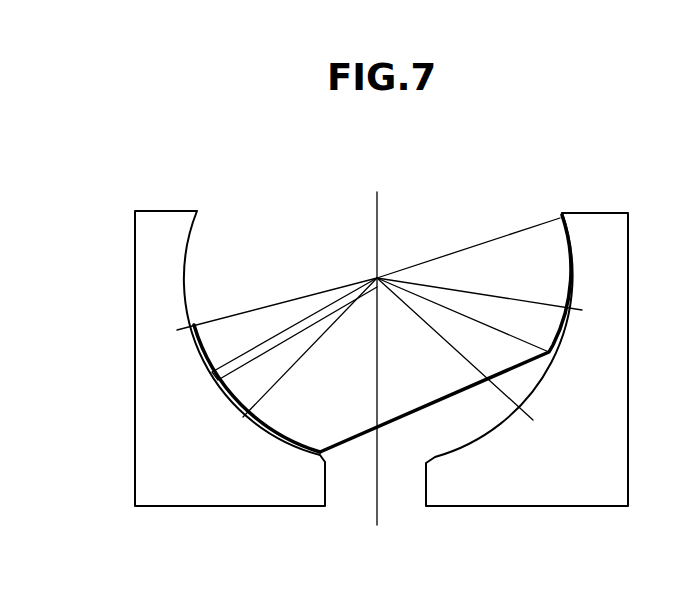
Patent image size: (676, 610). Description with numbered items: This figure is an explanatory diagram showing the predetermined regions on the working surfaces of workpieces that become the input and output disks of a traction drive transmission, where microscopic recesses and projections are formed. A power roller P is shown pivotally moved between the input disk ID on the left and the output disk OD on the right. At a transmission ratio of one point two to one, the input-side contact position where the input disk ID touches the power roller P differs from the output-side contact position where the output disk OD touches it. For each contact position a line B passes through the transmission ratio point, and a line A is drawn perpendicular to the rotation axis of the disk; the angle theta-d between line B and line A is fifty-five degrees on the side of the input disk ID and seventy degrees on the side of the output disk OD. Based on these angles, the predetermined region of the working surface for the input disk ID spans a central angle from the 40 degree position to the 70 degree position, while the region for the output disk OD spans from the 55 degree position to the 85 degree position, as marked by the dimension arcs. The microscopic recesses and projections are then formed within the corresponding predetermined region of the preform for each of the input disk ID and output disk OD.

The input disk ID is at (209, 490).
The output disk OD is at (540, 493).
The line perpendicular to rotation axis A is at (375, 495).
The power roller P is at (507, 262).
The line passing through transmission ratio point B is at (270, 337).
The 70 degree central angle 70 is at (472, 319).
The 55 degree central angle 55 is at (377, 381).
The 40 degree central angle 40 is at (220, 319).
The 85 degree central angle 85 is at (497, 301).